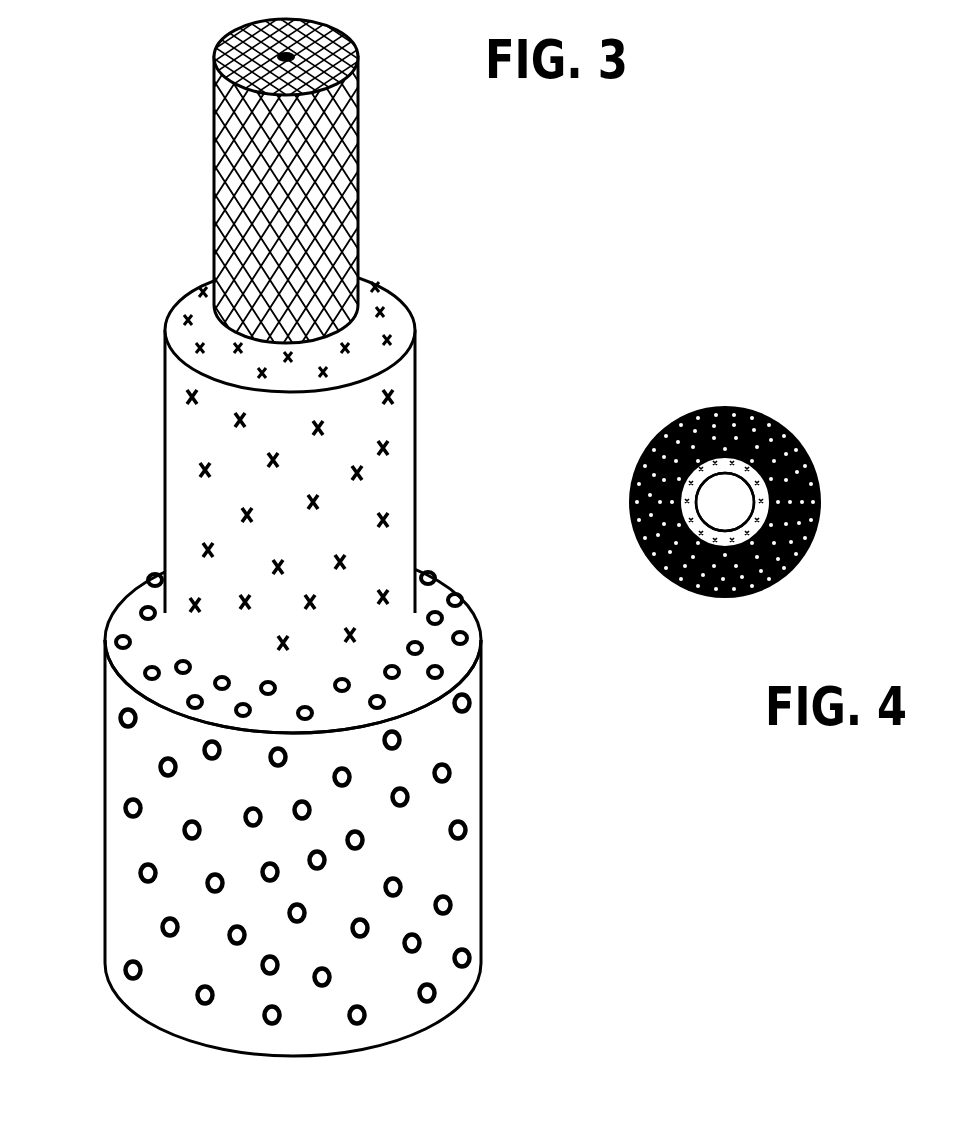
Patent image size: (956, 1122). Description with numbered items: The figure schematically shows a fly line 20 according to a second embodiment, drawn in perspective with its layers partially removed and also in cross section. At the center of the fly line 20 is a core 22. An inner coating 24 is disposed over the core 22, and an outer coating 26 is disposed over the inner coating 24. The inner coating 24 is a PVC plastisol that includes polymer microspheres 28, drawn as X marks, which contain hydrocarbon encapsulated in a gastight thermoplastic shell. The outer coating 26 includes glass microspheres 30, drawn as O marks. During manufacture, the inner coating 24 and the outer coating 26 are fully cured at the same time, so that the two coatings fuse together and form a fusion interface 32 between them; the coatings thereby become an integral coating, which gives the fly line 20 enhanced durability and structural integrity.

In FIG. 3, the fly line 20 is at (132, 139).
In FIG. 3, the core 22 is at (323, 192).
In FIG. 4, the core 22 is at (727, 500).
In FIG. 3, the inner coating 24 is at (400, 325).
In FIG. 4, the inner coating 24 is at (753, 523).
In FIG. 3, the outer coating 26 is at (433, 598).
In FIG. 4, the outer coating 26 is at (645, 468).
In FIG. 3, the polymer microspheres 28 is at (183, 395).
In FIG. 4, the polymer microspheres 28 is at (718, 463).
In FIG. 3, the glass microspheres 30 is at (162, 767).
In FIG. 4, the glass microspheres 30 is at (772, 427).
In FIG. 3, the fusion interface 32 is at (402, 635).
In FIG. 4, the fusion interface 32 is at (680, 518).